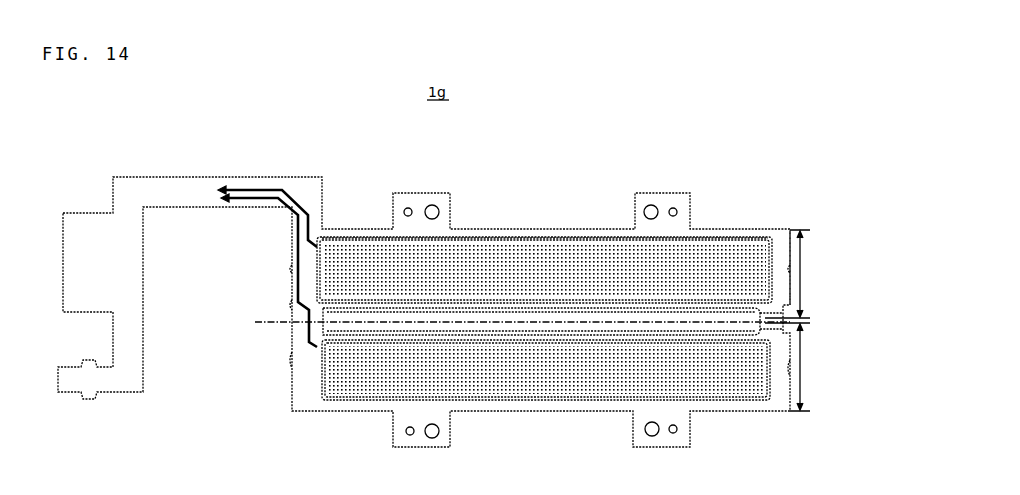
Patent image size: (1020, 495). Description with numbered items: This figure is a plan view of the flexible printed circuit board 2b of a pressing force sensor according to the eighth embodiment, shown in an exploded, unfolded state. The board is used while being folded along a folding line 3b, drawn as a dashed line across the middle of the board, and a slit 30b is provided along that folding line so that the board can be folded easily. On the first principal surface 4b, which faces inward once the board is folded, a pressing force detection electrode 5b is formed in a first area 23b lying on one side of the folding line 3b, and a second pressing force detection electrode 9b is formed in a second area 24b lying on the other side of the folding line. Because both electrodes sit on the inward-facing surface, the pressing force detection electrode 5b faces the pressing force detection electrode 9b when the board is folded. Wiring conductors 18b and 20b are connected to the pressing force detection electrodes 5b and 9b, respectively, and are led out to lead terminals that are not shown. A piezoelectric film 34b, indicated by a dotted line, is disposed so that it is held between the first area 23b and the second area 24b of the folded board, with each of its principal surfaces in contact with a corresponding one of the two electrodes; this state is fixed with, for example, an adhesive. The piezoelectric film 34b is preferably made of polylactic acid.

The flexible printed circuit board 2b is at (516, 226).
The pressing force detection electrode 5b is at (583, 236).
The pressing force detection electrode 9b is at (727, 398).
The folding line 3b is at (540, 325).
The slit 30b is at (607, 333).
The wiring conductor 18b is at (273, 188).
The wiring conductor 20b is at (292, 238).
The piezoelectric film 34b is at (717, 233).
The first principal surface 4b is at (780, 230).
The first area 23b is at (802, 250).
The second area 24b is at (803, 345).